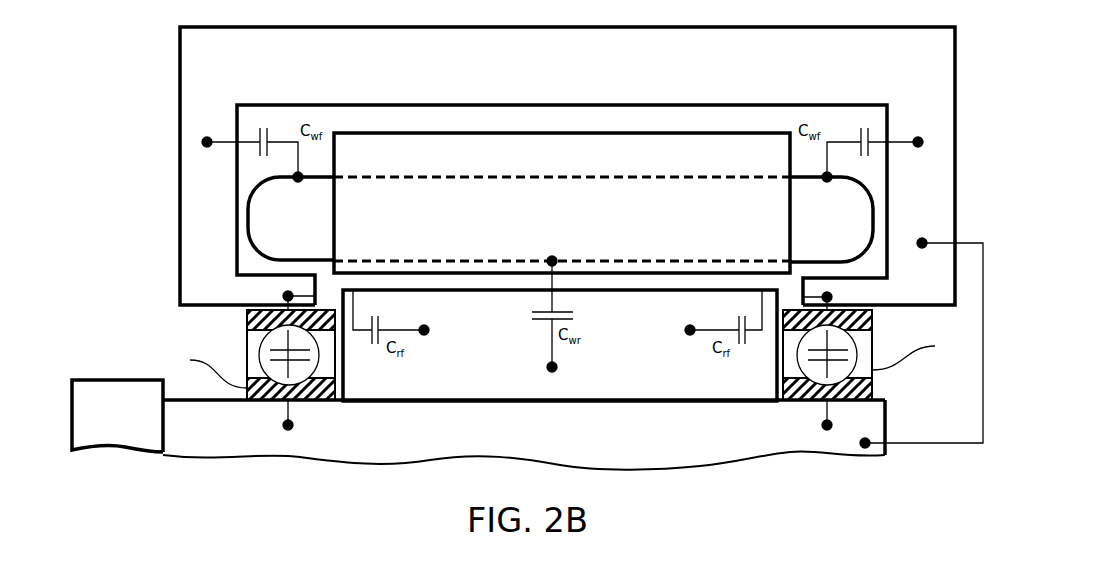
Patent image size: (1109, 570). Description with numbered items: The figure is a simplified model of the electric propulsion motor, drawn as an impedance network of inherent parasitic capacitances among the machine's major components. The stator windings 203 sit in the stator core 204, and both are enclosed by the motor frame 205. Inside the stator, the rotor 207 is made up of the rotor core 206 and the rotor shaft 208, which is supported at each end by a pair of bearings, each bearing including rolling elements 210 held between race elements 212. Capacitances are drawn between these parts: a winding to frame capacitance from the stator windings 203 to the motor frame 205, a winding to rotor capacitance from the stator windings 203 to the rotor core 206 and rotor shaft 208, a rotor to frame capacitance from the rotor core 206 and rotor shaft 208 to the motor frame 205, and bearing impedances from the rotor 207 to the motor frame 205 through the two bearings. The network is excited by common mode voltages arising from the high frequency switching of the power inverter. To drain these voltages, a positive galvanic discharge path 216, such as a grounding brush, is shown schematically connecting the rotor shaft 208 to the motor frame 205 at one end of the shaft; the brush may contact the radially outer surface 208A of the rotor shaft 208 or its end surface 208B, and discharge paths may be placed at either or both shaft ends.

The stator windings 203 is at (254, 240).
The stator core 204 is at (565, 223).
The motor frame 205 is at (572, 78).
The rotor core 206 is at (632, 360).
The rotor 207 is at (136, 344).
The rotor shaft 208 is at (554, 443).
The radially outer surface 208A is at (186, 398).
The end surface 208B is at (888, 428).
The rolling elements 210 is at (247, 353).
The race elements 212 is at (247, 318).
The grounding path 216 is at (975, 447).